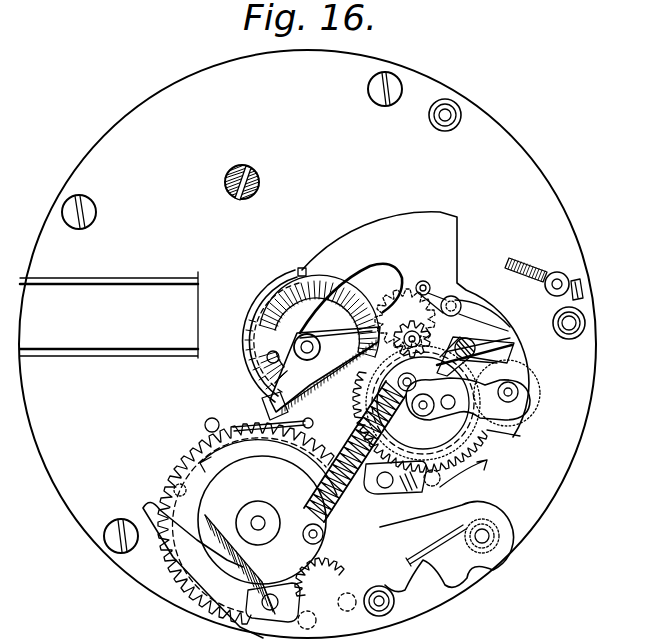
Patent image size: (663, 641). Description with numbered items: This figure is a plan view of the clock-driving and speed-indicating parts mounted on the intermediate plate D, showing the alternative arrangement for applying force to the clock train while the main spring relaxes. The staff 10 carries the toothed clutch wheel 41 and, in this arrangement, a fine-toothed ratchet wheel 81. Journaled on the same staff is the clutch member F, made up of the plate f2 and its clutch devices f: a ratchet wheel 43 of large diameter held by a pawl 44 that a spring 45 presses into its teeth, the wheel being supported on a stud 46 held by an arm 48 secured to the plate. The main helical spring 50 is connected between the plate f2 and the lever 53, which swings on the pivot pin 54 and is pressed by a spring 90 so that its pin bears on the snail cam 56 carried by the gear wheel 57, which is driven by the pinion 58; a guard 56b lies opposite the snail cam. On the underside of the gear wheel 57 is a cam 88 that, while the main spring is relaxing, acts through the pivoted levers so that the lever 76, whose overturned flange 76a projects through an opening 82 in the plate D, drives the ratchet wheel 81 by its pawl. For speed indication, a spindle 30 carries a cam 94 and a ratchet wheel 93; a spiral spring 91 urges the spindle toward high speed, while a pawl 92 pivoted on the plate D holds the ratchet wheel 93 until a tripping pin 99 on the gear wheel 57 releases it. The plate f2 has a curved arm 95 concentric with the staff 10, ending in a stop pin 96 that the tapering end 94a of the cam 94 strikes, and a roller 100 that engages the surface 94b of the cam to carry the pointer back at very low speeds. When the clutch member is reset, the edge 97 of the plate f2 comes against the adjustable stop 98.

The intermediate plate D is at (307, 344).
The spiral spring 91 is at (268, 292).
The ratchet wheel 93 is at (265, 308).
The curved arm 95 is at (330, 316).
The edge 97 is at (462, 228).
The spindle 30 is at (296, 341).
The stop pin 96 is at (266, 357).
The cam 94 is at (325, 370).
The surface of the cam 94b is at (336, 338).
The tapering end of the cam 94a is at (266, 399).
The pawl 92 is at (265, 405).
The helical spring 50 is at (326, 425).
The roller 100 is at (398, 320).
The spring 45 is at (465, 322).
The plate f2 is at (462, 268).
The adjustable stop 98 is at (585, 291).
The staff 10 is at (423, 413).
The arm 48 is at (484, 447).
The lever 76 is at (318, 496).
The clutch devices f is at (481, 399).
The ratchet wheel 43 is at (534, 393).
The pawl 44 is at (475, 355).
The clutch member F is at (497, 363).
The stud 46 is at (487, 430).
The clutch wheel 41 is at (470, 472).
The gear wheel 57 is at (198, 451).
The tripping pin 99 is at (171, 485).
The snail cam 56 is at (262, 520).
The cam 88 is at (252, 514).
The guard 56b is at (200, 568).
The pinion 58 is at (375, 562).
The lever 53 is at (412, 496).
The opening 82 is at (437, 480).
The ratchet wheel 81 is at (483, 497).
The spring 90 is at (487, 567).
The pivot pin 54 is at (500, 540).
The flange 76a is at (440, 522).